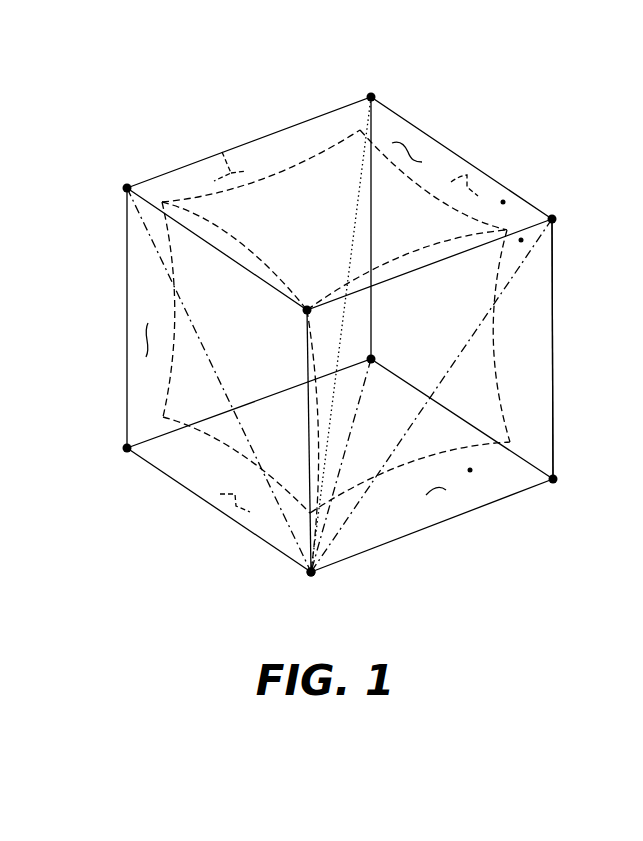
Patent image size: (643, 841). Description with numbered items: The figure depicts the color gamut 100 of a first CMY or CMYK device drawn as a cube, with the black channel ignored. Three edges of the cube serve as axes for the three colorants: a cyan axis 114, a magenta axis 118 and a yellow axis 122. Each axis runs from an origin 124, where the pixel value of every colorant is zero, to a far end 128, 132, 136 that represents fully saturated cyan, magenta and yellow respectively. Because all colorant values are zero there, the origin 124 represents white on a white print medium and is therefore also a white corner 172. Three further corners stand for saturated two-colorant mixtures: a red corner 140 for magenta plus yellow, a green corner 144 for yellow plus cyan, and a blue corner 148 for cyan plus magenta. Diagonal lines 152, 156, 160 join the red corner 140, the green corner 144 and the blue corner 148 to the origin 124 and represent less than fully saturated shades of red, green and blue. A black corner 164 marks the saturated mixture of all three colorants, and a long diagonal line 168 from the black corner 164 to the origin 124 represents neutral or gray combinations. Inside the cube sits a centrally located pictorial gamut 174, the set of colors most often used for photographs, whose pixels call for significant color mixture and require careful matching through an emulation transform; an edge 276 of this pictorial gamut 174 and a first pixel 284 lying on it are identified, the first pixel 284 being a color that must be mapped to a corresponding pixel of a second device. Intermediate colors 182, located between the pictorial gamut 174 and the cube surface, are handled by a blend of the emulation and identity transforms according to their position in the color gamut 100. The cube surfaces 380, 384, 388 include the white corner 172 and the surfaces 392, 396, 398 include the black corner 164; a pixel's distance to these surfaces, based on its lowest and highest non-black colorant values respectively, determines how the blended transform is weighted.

The color gamut 100 is at (228, 84).
The cyan axis 114 is at (525, 493).
The magenta axis 118 is at (156, 470).
The yellow axis 122 is at (304, 527).
The origin 124 is at (311, 572).
The far end of cyan axis 128 is at (553, 475).
The far end of magenta axis 132 is at (127, 448).
The far end of yellow axis 136 is at (307, 310).
The red corner 140 is at (127, 188).
The green corner 144 is at (553, 217).
The blue corner 148 is at (371, 359).
The diagonal line 152 is at (155, 245).
The diagonal line 156 is at (527, 253).
The diagonal line 160 is at (352, 432).
The black corner 164 is at (371, 97).
The long diagonal line 168 is at (342, 226).
The white corner 172 is at (311, 572).
The pictorial gamut 174 is at (325, 180).
The intermediate colors 182 is at (521, 240).
The edge of pictorial gamut 276 is at (285, 171).
The first pixel 284 is at (175, 320).
The surface of gamut cube 380 is at (143, 347).
The surface of gamut cube 384 is at (445, 490).
The surface of gamut cube 388 is at (225, 506).
The surface of gamut cube 392 is at (222, 152).
The surface of gamut cube 396 is at (478, 172).
The surface of gamut cube 398 is at (412, 147).